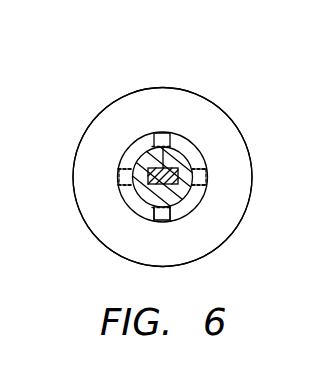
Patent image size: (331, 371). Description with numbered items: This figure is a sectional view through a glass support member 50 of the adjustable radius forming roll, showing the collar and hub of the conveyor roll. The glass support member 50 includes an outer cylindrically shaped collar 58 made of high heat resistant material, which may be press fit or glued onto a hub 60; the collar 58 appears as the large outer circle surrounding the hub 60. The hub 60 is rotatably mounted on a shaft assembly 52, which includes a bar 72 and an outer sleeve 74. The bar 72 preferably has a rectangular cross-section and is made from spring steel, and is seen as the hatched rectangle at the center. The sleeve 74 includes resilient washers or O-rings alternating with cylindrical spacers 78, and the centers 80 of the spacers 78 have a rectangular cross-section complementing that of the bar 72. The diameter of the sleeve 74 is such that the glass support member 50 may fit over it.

The glass support member 50 is at (245, 70).
The shaft assembly 52 is at (146, 160).
The collar 58 is at (228, 117).
The hub 60 is at (197, 148).
The bar 72 is at (168, 202).
The outer sleeve 74 is at (133, 199).
The cylindrical spacer 78 is at (188, 193).
The center 80 is at (148, 170).